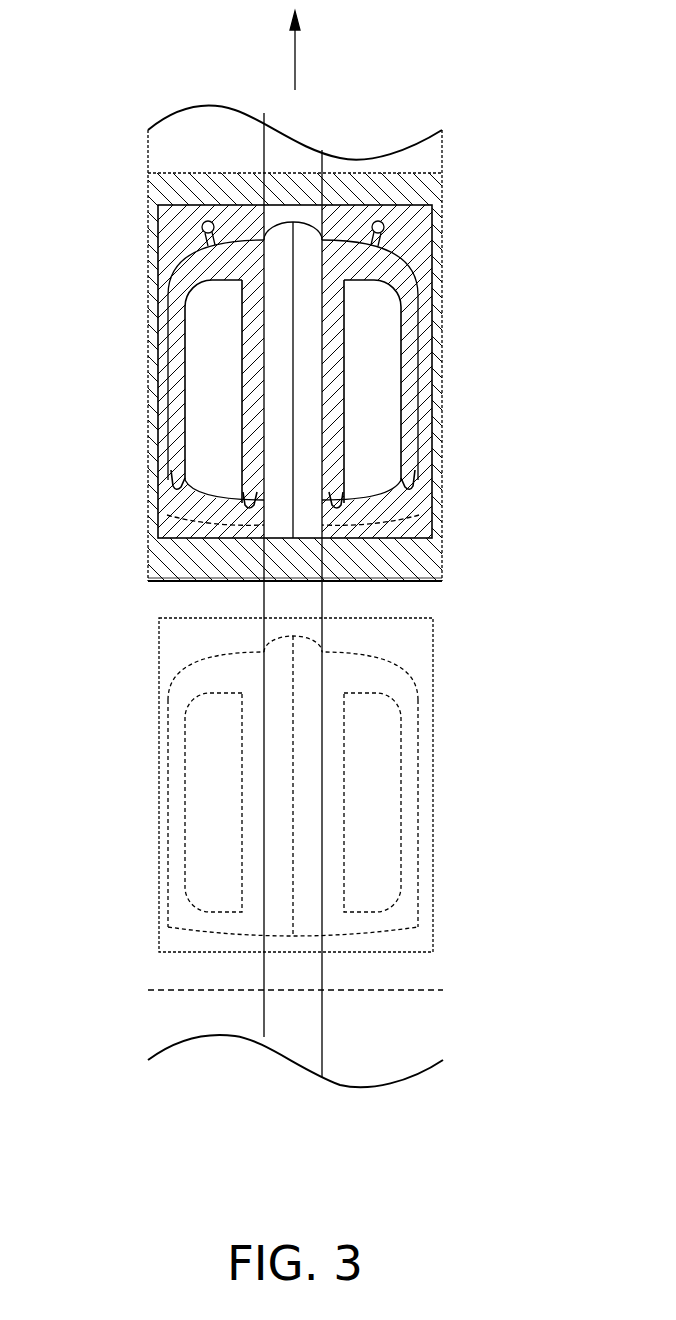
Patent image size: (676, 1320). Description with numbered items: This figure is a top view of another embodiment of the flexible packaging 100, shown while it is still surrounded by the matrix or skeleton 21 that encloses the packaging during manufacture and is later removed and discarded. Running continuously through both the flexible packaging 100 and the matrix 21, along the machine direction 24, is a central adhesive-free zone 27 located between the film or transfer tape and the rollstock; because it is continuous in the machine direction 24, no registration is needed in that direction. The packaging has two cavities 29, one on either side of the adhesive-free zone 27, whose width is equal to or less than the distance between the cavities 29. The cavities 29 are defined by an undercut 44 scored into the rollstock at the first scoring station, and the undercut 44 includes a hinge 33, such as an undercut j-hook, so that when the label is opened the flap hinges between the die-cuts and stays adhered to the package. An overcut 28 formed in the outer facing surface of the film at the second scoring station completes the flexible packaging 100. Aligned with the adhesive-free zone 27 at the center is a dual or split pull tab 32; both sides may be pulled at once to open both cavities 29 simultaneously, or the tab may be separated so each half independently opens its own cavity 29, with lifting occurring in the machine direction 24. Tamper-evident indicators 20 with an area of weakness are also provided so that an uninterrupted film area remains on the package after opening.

The flexible packaging 100 is at (428, 194).
The tamper-evident indicators 20 is at (209, 220).
The matrix or skeleton 21 is at (188, 567).
The machine direction 24 is at (297, 60).
The adhesive-free zone 27 is at (293, 1067).
The overcut 28 is at (407, 580).
The cavities 29 is at (212, 307).
The dual or split pull tab 32 is at (307, 245).
The hinge 33 is at (172, 492).
The undercut 44 is at (185, 391).